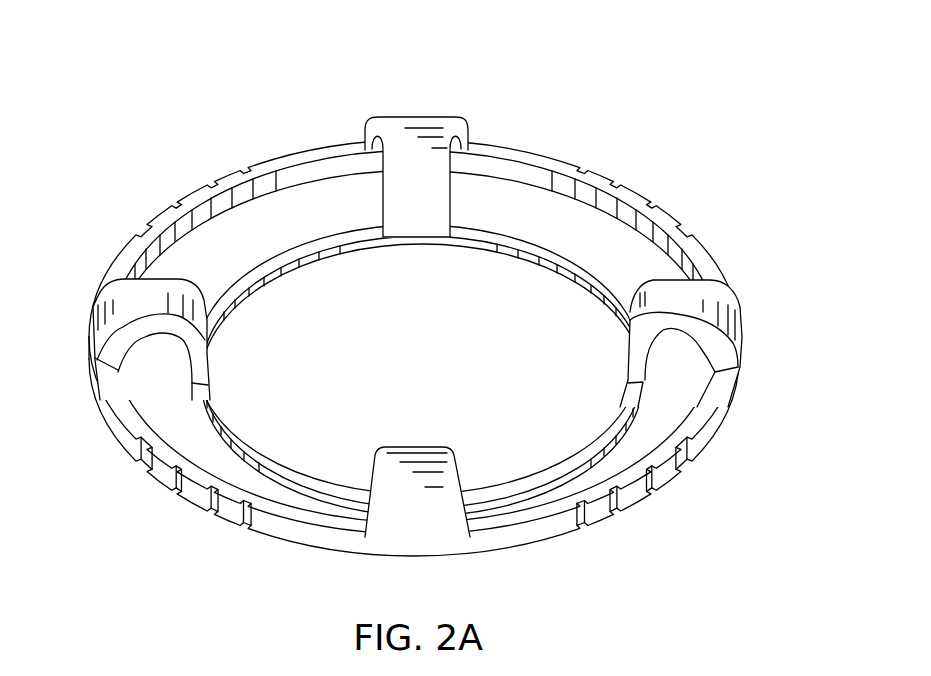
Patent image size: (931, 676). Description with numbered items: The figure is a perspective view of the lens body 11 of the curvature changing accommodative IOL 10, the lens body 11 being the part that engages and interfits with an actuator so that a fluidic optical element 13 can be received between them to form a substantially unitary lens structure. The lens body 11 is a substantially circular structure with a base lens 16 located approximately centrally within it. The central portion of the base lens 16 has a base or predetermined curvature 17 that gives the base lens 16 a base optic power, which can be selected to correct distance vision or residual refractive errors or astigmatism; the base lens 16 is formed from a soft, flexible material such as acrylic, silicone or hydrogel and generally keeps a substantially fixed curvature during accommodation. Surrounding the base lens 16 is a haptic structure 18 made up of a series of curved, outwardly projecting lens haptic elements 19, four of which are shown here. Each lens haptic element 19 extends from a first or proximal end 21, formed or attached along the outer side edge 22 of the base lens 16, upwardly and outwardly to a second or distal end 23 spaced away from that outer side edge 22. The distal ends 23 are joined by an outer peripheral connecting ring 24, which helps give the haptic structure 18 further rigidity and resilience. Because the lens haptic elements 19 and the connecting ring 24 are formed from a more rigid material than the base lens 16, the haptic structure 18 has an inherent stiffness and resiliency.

The IOL 10 is at (160, 125).
The lens body 11 is at (147, 554).
The fluidic optical element 13 is at (542, 288).
The base lens 16 is at (345, 455).
The base or predetermined curvature 17 is at (403, 357).
The haptic structure 18 is at (490, 105).
The lens haptic elements 19 is at (400, 138).
The first or proximal end 21 is at (452, 228).
The outer side edge 22 is at (240, 297).
The second or distal end 23 is at (96, 352).
The outer peripheral connecting ring 24 is at (712, 437).